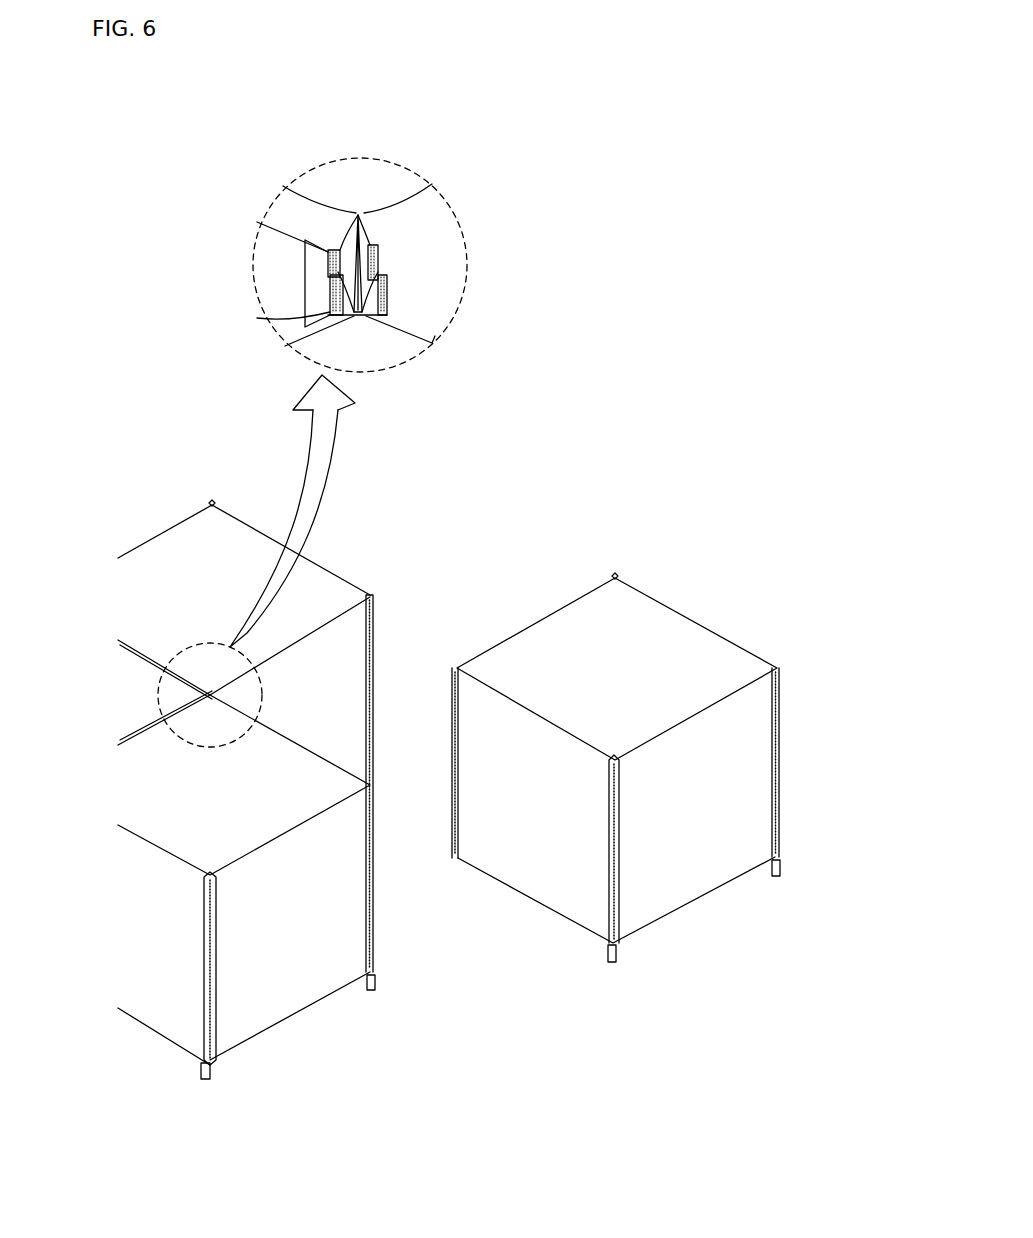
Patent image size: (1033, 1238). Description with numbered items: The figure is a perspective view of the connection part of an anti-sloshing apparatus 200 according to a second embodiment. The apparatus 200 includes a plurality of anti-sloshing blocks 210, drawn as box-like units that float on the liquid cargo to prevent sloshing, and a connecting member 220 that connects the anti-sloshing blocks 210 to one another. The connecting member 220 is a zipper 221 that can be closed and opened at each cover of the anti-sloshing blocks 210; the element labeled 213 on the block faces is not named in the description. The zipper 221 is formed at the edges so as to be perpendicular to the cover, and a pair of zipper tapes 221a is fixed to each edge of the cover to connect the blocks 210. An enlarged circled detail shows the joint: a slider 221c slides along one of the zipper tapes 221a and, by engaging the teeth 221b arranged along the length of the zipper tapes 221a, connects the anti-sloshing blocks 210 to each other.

The anti-sloshing apparatus 200 is at (440, 134).
The anti-sloshing block 210 is at (668, 603).
The side panel 213 is at (707, 637).
The connecting member 220 is at (134, 212).
The zipper 221 is at (179, 397).
The zipper tape 221a is at (350, 225).
The teeth 221b is at (385, 296).
The slider 221c is at (330, 268).